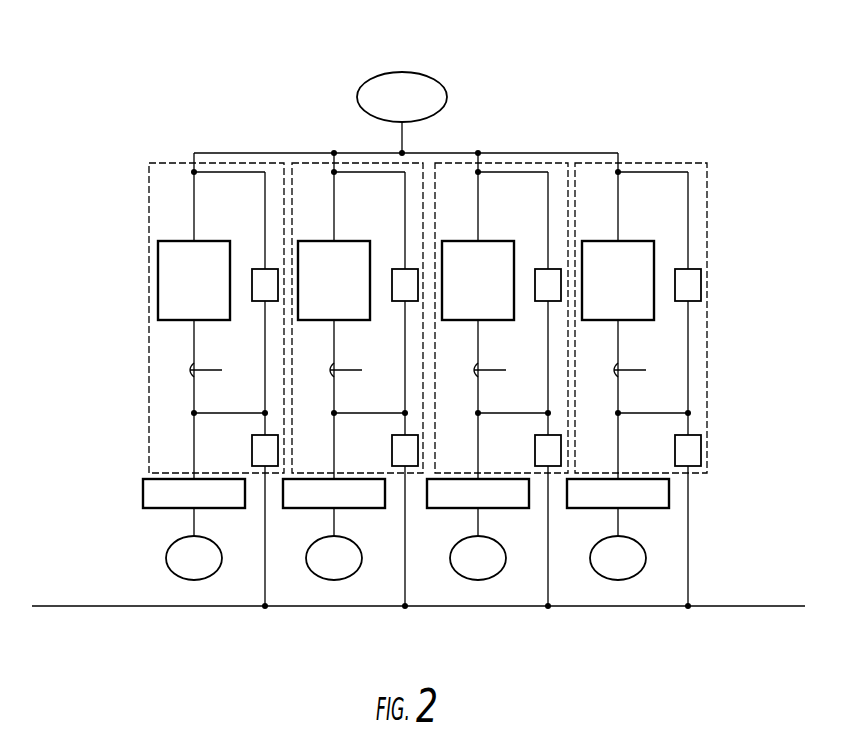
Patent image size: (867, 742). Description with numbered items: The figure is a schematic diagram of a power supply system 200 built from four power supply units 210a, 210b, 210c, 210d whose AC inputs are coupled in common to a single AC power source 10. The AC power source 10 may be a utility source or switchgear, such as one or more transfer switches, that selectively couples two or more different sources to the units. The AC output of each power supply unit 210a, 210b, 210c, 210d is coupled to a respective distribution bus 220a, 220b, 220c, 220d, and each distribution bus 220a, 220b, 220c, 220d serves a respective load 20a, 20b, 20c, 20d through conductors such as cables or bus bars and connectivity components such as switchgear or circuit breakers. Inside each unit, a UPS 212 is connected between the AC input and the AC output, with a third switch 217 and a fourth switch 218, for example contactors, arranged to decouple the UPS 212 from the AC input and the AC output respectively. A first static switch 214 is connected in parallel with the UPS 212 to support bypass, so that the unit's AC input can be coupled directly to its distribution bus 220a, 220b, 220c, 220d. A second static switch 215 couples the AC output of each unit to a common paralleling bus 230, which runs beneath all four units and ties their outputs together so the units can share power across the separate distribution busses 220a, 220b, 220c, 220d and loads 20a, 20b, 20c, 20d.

The power supply system 200 is at (648, 64).
The AC power source 10 is at (431, 81).
The first power supply unit 210a is at (148, 183).
The second power supply unit 210b is at (317, 163).
The third power supply unit 210c is at (509, 163).
The fourth power supply unit 210d is at (681, 163).
The third switch 217 is at (197, 203).
The first static switch 214 is at (252, 268).
The UPS 212 is at (209, 321).
The fourth switch 218 is at (433, 370).
The second static switch 215 is at (251, 452).
The first distribution bus 220a is at (142, 496).
The second distribution bus 220b is at (347, 509).
The third distribution bus 220c is at (491, 509).
The fourth distribution bus 220d is at (631, 509).
The first load 20a is at (166, 563).
The second load 20b is at (306, 561).
The third load 20c is at (450, 561).
The fourth load 20d is at (590, 561).
The paralleling bus 230 is at (375, 608).